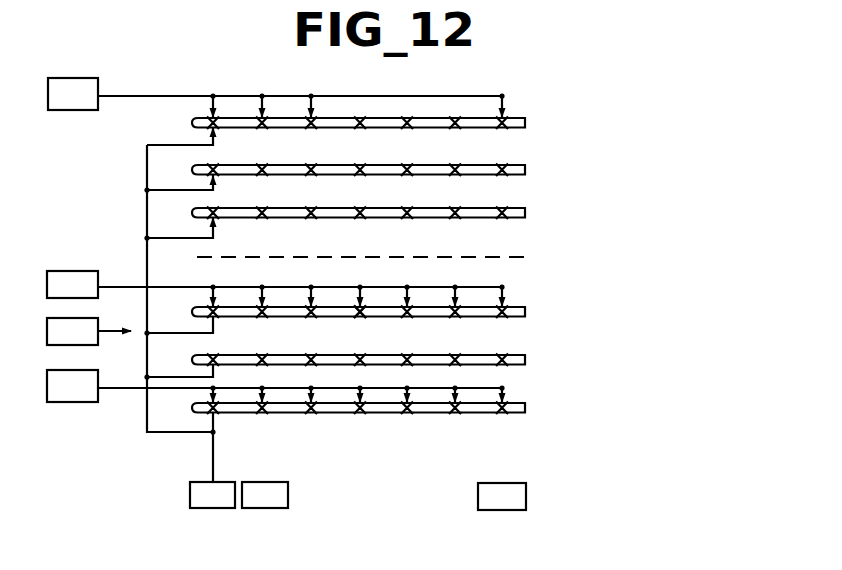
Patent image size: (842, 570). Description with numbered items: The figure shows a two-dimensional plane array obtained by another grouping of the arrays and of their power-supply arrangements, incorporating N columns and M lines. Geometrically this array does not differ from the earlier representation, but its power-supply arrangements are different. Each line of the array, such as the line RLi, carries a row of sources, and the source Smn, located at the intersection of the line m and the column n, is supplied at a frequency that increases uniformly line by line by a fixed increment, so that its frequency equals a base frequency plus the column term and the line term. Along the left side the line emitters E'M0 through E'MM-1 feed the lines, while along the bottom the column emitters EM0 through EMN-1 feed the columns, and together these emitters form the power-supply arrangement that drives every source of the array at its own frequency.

The row line i RLi is at (526, 211).
The source Smn is at (364, 284).
The emitter E'M M-1 E'MM-1 is at (78, 94).
The emitter E'M 0 E'M0 is at (71, 405).
The emitter EM 0 EM0 is at (190, 488).
The emitter EM N-1 EMN-1 is at (503, 516).